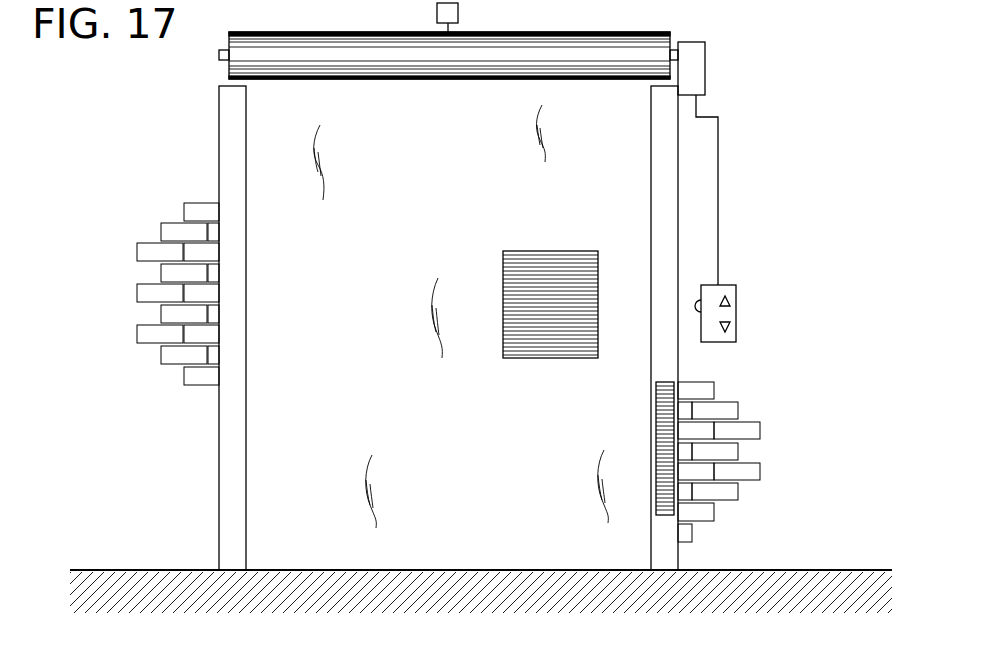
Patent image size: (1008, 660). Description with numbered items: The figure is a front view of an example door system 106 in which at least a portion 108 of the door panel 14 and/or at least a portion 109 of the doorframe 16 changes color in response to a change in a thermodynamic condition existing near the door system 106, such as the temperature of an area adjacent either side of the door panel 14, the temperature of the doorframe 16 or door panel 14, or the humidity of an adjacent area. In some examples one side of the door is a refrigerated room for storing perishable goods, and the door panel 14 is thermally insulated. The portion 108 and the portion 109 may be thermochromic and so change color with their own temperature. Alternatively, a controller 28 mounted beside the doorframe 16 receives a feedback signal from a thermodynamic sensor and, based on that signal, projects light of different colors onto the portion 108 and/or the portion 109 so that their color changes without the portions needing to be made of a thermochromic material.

The door system 106 is at (786, 111).
The doorframe 16 is at (246, 316).
The door panel 14 is at (283, 460).
The portion of the door panel 108 is at (527, 251).
The portion of the doorframe 109 is at (665, 382).
The controller 28 is at (736, 312).